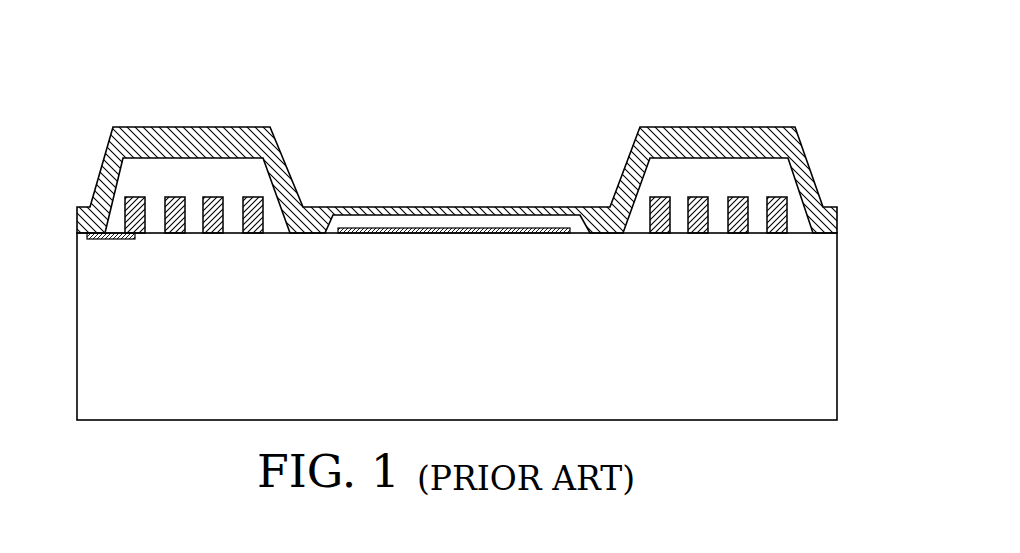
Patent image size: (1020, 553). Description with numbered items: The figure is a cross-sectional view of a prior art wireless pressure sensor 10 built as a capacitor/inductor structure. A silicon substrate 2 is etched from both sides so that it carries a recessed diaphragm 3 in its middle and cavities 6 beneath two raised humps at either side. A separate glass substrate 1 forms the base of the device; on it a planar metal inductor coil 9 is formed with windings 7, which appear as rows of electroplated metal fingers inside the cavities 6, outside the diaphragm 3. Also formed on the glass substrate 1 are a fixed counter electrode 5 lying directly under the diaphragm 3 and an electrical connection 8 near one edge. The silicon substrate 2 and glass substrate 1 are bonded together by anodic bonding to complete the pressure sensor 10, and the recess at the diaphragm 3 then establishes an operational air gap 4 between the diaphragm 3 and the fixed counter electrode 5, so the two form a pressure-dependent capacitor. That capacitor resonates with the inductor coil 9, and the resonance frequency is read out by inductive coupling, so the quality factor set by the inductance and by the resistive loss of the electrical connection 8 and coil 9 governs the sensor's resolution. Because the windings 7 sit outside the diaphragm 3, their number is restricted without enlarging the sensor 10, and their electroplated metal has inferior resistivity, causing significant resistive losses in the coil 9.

The glass substrate 1 is at (806, 311).
The silicon substrate 2 is at (797, 141).
The recessed diaphragm 3 is at (544, 210).
The operational air gap 4 is at (512, 222).
The fixed counter electrode 5 is at (427, 233).
The cavities 6 is at (187, 172).
The windings 7 is at (143, 236).
The electrical connection 8 is at (105, 240).
The planar metal inductor coil 9 is at (214, 186).
The wireless pressure sensor 10 is at (437, 141).